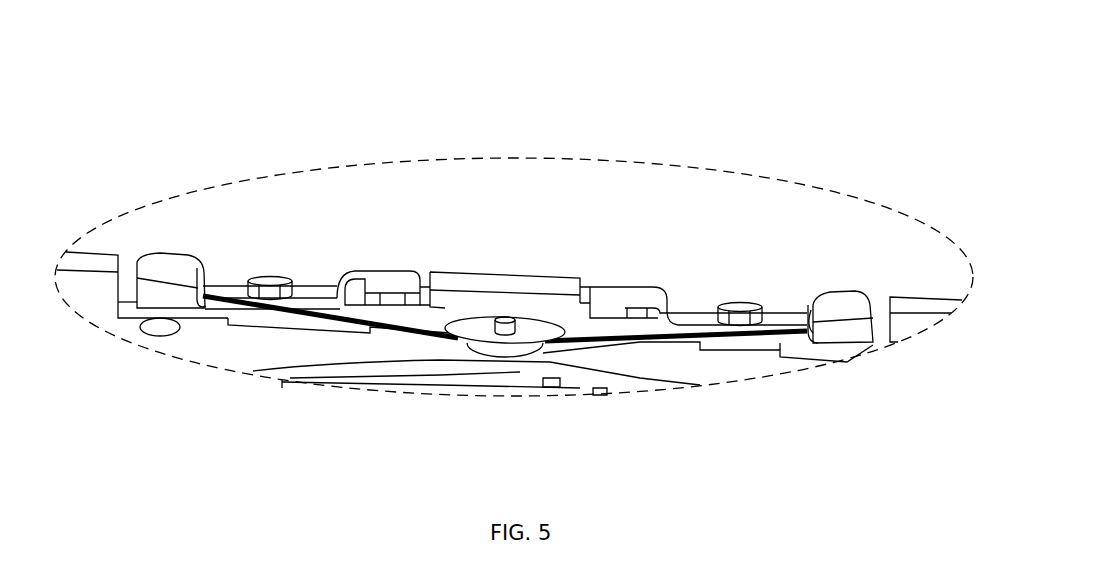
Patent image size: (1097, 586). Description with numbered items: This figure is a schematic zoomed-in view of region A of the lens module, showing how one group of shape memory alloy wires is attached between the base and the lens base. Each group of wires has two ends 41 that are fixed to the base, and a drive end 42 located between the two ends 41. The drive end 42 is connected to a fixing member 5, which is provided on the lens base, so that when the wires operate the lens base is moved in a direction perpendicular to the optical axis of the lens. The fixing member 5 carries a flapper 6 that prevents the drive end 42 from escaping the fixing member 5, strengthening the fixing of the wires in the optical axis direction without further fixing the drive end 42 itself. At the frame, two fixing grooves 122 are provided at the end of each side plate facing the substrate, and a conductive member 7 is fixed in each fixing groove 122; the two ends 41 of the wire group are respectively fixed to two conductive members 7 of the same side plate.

The zoomed-in region A is at (578, 89).
The fixing member 5 is at (520, 353).
The flapper 6 is at (537, 328).
The conductive member 7 is at (167, 290).
The end 41 is at (207, 297).
The drive end 42 is at (492, 350).
The fixing groove 122 is at (882, 320).